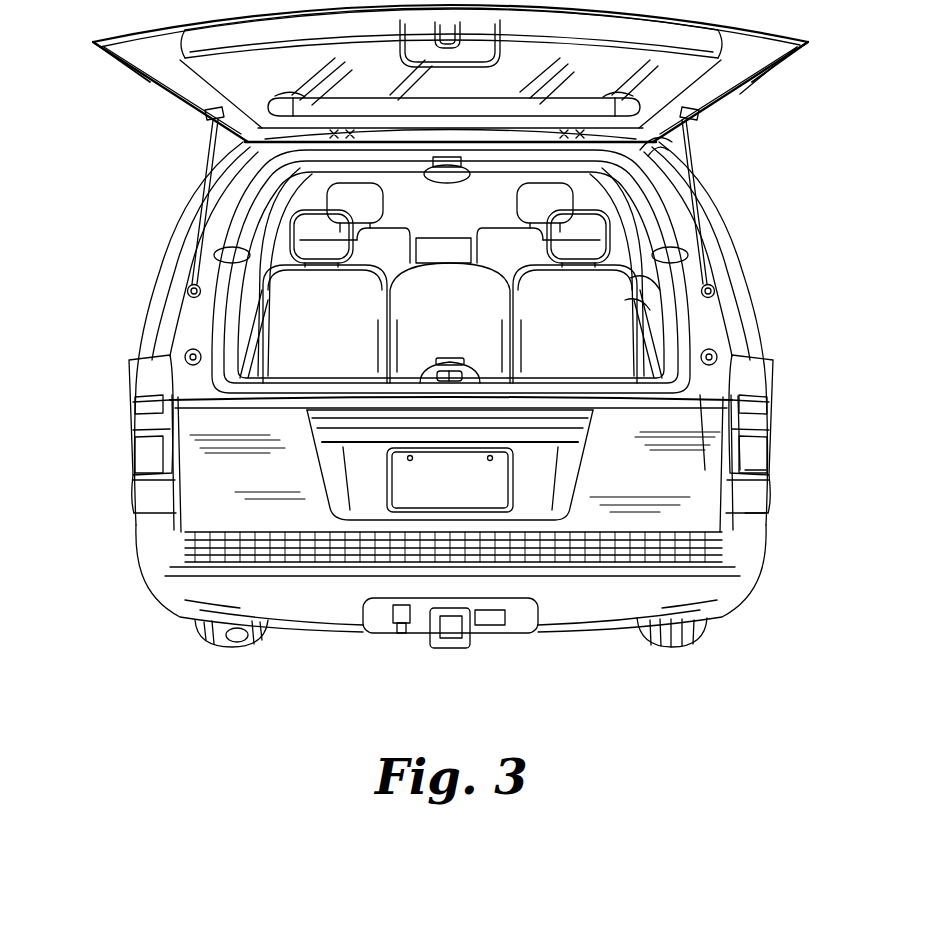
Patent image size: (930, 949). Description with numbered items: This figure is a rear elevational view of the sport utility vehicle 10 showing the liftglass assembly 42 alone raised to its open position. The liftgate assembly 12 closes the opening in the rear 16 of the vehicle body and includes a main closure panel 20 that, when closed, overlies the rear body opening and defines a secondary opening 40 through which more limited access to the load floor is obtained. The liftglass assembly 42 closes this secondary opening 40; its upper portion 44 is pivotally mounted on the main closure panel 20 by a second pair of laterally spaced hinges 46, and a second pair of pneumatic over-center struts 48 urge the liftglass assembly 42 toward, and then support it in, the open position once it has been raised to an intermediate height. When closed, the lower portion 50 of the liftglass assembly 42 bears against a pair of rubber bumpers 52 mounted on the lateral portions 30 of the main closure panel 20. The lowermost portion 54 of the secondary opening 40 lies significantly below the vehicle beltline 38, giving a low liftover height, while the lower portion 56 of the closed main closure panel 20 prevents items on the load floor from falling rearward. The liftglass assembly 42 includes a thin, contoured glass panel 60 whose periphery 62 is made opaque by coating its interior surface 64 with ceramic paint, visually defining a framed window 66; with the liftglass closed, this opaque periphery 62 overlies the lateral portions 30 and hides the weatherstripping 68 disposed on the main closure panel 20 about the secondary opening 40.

The sport utility vehicle 10 is at (774, 231).
The liftgate assembly 12 is at (165, 440).
The rear 16 is at (747, 533).
The main closure panel 20 is at (730, 425).
The lateral portions 30 is at (198, 390).
The beltline 38 is at (152, 355).
The secondary opening 40 is at (247, 258).
The liftglass assembly 42 is at (160, 98).
The upper portion 44 is at (690, 130).
The second pair of laterally spaced hinges 46 is at (660, 185).
The second pair of pneumatic over-center struts 48 is at (690, 153).
The lower portion 50 is at (757, 50).
The rubber bumpers 52 is at (184, 358).
The lowermost portion 54 is at (620, 380).
The lower portion 56 is at (707, 462).
The glass panel 60 is at (733, 83).
The periphery 62 is at (207, 104).
The interior surface 64 is at (137, 53).
The framed window 66 is at (210, 163).
The weatherstripping 68 is at (657, 280).